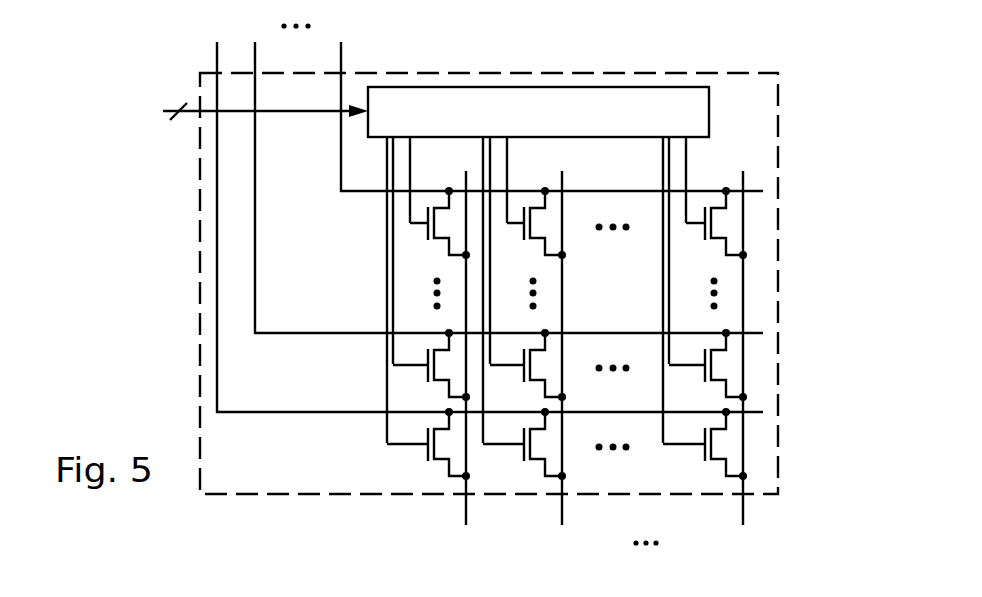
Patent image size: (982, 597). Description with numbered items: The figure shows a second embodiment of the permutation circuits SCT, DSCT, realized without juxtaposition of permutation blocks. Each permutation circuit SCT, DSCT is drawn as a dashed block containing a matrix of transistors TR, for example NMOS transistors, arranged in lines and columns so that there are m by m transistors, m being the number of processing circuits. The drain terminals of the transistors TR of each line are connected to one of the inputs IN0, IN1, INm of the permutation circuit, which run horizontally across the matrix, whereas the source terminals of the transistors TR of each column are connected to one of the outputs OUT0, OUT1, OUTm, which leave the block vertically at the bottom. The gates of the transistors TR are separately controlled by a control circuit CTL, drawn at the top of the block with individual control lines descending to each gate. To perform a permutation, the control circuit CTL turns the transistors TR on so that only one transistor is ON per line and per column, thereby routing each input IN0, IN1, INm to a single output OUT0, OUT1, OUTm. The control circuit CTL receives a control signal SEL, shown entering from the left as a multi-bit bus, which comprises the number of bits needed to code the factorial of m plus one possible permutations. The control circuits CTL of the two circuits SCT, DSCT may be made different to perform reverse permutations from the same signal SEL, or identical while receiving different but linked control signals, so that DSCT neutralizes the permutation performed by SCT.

The permutation circuit SCT is at (524, 256).
The permutation circuit DSCT is at (789, 47).
The control circuit CTL is at (538, 265).
The control signal SEL is at (241, 112).
The input IN0 is at (483, 212).
The input IN1 is at (501, 173).
The input INm is at (542, 102).
The output OUT0 is at (465, 363).
The output OUT1 is at (561, 363).
The output OUTm is at (741, 363).
The transistor TR is at (427, 238).